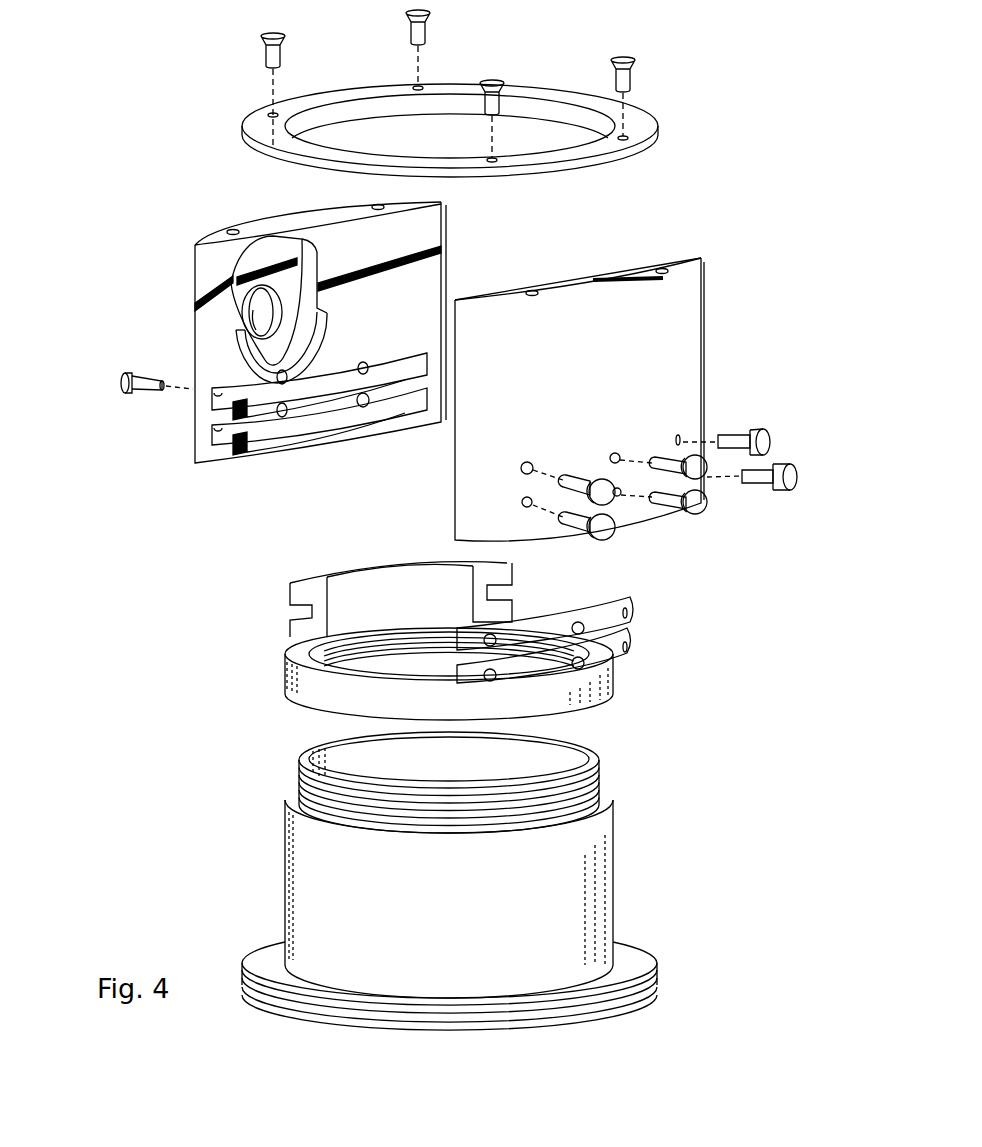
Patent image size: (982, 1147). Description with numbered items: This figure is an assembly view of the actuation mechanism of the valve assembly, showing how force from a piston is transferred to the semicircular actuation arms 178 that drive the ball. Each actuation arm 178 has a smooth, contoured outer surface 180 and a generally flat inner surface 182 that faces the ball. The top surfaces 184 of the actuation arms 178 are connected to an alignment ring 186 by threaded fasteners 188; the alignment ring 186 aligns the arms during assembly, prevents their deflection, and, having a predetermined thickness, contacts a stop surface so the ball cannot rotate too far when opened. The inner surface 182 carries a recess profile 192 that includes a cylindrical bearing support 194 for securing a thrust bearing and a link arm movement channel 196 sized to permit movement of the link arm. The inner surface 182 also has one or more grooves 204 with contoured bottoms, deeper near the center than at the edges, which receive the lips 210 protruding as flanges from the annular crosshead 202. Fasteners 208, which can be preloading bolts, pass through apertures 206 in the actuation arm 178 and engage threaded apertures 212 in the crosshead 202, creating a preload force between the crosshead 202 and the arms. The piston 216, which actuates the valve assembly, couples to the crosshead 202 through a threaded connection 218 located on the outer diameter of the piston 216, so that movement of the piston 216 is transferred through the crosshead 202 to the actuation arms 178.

The actuation arm 178 is at (713, 290).
The actuation arm outer surface 180 is at (692, 348).
The actuation arm inner surface 182 is at (224, 259).
The top surface 184 is at (253, 226).
The alignment ring 186 is at (658, 133).
The threaded fastener 188 is at (264, 56).
The recess profile 192 is at (218, 281).
The bearing support 194 is at (257, 315).
The link arm movement channel 196 is at (283, 250).
The crosshead 202 is at (243, 718).
The groove 204 is at (295, 412).
The aperture 206 is at (528, 461).
The fastener 208 is at (147, 391).
The lip 210 is at (288, 602).
The threaded aperture 212 is at (631, 612).
The piston 216 is at (612, 873).
The threaded connection 218 is at (599, 772).